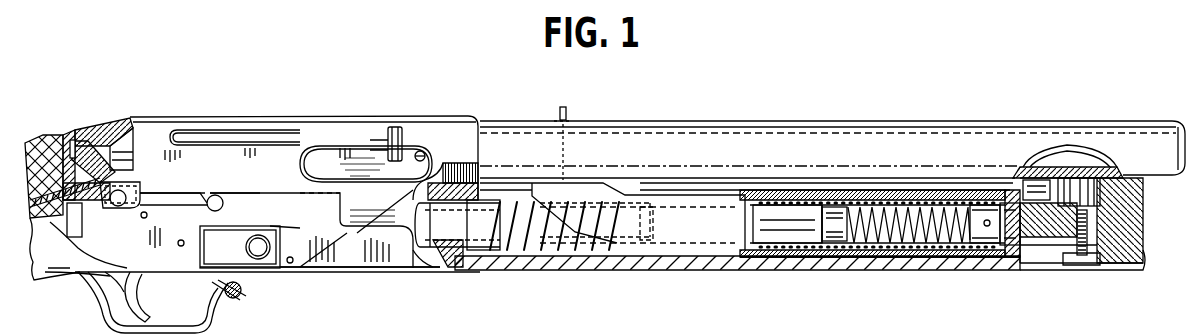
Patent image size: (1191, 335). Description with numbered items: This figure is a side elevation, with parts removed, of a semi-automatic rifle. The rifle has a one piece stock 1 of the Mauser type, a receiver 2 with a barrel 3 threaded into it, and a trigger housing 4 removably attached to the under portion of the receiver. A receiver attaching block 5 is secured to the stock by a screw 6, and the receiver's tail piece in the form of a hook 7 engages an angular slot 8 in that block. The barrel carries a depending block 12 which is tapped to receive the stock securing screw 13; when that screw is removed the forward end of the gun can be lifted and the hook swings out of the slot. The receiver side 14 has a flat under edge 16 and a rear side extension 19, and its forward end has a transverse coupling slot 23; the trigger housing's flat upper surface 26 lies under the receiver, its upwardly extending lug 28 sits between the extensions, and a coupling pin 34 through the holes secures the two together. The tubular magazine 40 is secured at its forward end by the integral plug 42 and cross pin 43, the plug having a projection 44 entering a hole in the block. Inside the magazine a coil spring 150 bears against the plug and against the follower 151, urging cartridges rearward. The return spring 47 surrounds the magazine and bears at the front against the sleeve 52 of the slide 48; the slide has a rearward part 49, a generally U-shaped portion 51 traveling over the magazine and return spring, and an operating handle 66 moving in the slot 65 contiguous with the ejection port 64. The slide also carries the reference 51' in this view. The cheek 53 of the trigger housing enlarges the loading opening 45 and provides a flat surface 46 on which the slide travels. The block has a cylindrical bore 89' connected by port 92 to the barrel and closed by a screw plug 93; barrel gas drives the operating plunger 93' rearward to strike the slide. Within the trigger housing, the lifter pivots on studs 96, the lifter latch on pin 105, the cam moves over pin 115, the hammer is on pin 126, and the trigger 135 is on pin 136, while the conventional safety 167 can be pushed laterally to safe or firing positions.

The stock 1 is at (918, 270).
The receiver 2 is at (449, 109).
The barrel 3 is at (836, 142).
The trigger housing 4 is at (366, 279).
The receiver attaching block 5 is at (93, 127).
The screw 6 is at (38, 147).
The tail piece (hook) 7 is at (72, 143).
The angular slot 8 is at (64, 142).
The depending block 12 is at (1040, 258).
The stock securing screw 13 is at (1096, 266).
The receiver side 14 is at (246, 175).
The flat under edge 16 is at (237, 203).
The rear side extension 19 is at (100, 226).
The transverse coupling slot 23 is at (472, 170).
The flat upper surface 26 is at (300, 195).
The upwardly extending lug 28 is at (138, 185).
The coupling pin 34 is at (120, 192).
The tubular magazine 40 is at (868, 262).
The plug 42 is at (986, 226).
The cross pin 43 is at (992, 245).
The projection 44 is at (1025, 226).
The opening 45 is at (440, 270).
The flat surface 46 is at (268, 228).
The return spring 47 is at (552, 250).
The slide 48 is at (368, 228).
The rearward part of slide 49 is at (330, 145).
The U-shaped portion of slide 51 is at (862, 201).
The action bar slide 51' is at (638, 198).
The slide sleeve 52 is at (1003, 192).
The cheek (side extension) 53 is at (322, 264).
The ejection port 64 is at (426, 157).
The slot 65 is at (216, 137).
The operating handle 66 is at (394, 128).
The cylindrical bore 89' is at (1079, 157).
The port 92 is at (1095, 162).
The closure screw plug 93 is at (1124, 221).
The operating plunger 93' is at (1037, 154).
The stud 96 is at (216, 195).
The pin 105 is at (291, 264).
The pin 115 is at (148, 215).
The pin 126 is at (240, 247).
The trigger 135 is at (135, 322).
The pin 136 is at (190, 232).
The coil spring 150 is at (870, 250).
The follower 151 is at (790, 235).
The safety 167 is at (233, 300).